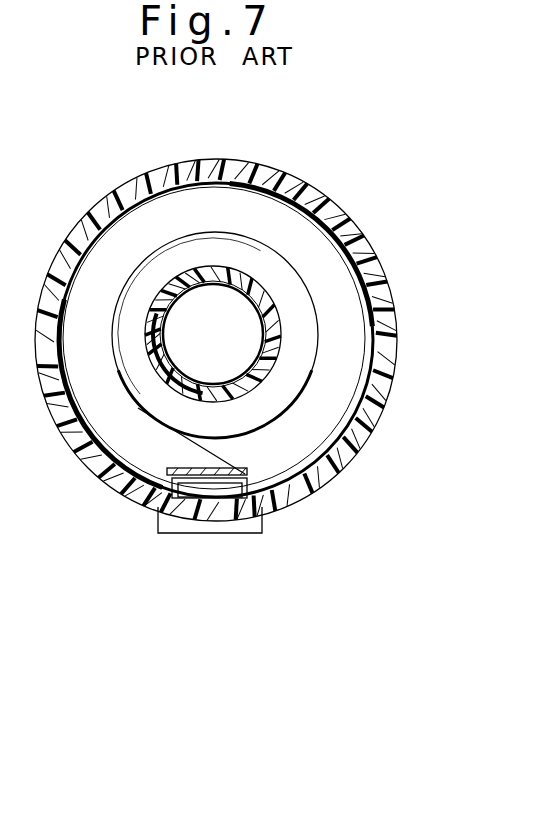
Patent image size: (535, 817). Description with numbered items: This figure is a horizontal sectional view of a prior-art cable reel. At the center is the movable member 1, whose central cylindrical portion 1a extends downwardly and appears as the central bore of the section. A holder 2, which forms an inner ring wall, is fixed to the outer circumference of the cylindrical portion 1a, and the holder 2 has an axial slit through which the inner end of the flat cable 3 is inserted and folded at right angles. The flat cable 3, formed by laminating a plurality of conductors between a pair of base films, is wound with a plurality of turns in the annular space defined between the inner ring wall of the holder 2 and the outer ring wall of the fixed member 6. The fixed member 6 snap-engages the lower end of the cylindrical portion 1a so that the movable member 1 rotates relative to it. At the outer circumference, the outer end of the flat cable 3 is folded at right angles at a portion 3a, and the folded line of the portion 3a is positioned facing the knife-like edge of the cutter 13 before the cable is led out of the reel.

The movable member 1 is at (300, 192).
The central cylindrical portion 1a is at (257, 355).
The holder 2 is at (257, 387).
The flat cable 3 is at (120, 383).
The folded portion 3a is at (213, 488).
The fixed member 6 is at (388, 353).
The cutter 13 is at (240, 472).